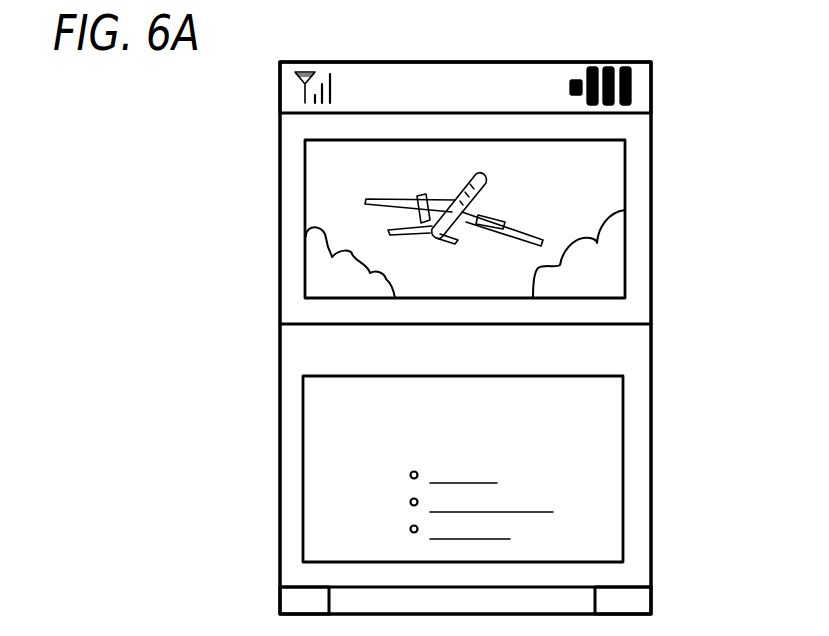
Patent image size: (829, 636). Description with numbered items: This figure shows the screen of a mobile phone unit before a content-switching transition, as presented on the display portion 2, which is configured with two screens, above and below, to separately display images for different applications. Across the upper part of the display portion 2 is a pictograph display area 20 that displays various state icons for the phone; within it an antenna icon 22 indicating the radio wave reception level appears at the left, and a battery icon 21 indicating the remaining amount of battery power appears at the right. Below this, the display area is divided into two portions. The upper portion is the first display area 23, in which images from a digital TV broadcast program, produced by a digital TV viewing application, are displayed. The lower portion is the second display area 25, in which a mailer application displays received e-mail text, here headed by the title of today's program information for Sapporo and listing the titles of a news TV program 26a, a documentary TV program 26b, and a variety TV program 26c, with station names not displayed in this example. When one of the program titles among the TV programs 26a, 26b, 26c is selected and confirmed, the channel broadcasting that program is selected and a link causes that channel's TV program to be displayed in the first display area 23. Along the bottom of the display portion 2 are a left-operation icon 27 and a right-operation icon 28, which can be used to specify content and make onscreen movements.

The display portion 2 is at (452, 62).
The pictograph display area 20 is at (638, 104).
The battery icon 21 is at (594, 68).
The antenna icon 22 is at (312, 69).
The first display area 23 is at (637, 195).
The second display area 25 is at (520, 469).
The TV program (news) 26a is at (502, 475).
The TV program (documentary) 26b is at (537, 495).
The TV program (variety) 26c is at (512, 528).
The left-operation icon 27 is at (290, 600).
The right-operation icon 28 is at (638, 603).